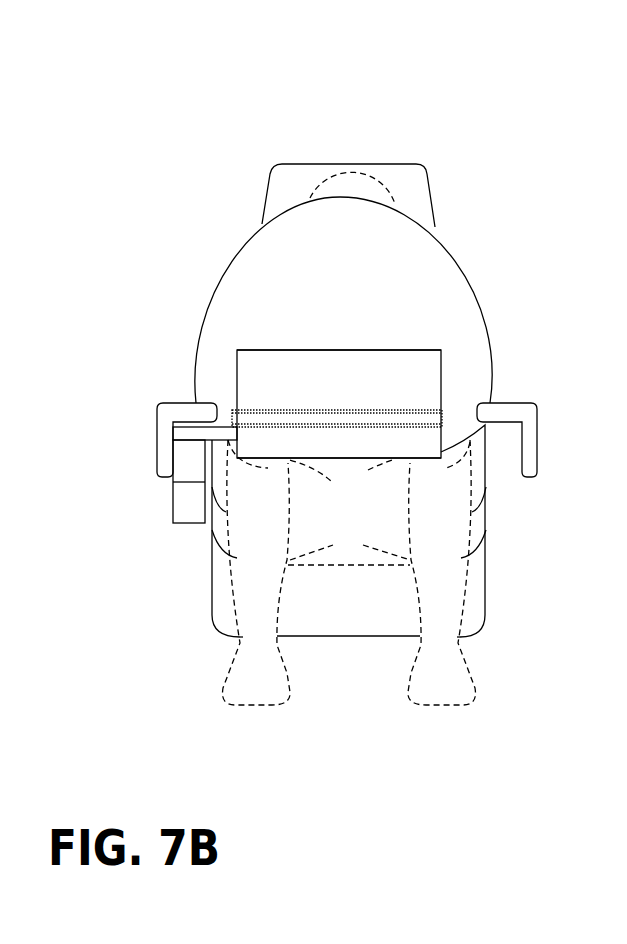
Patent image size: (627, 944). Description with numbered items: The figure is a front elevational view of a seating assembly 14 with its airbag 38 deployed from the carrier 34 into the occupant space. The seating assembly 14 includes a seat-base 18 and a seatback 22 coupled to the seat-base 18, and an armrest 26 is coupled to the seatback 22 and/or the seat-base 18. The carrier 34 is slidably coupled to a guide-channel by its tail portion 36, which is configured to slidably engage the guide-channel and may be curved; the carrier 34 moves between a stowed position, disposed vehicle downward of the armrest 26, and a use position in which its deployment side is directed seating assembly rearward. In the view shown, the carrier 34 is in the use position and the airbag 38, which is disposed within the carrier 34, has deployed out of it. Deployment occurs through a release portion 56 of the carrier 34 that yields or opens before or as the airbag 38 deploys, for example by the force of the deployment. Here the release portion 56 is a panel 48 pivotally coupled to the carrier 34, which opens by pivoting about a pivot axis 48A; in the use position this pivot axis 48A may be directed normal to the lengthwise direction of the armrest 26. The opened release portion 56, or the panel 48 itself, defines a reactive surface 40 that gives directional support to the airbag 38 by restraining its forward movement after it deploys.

The seating assembly 14 is at (188, 118).
The seat-base 18 is at (350, 598).
The seatback 22 is at (477, 462).
The armrest 26 is at (160, 423).
The carrier 34 is at (332, 443).
The tail portion 36 is at (200, 428).
The airbag 38 is at (425, 298).
The reactive surface 40 is at (225, 366).
The panel 48 is at (309, 397).
The pivot axis 48A is at (288, 425).
The release portion 56 is at (312, 340).